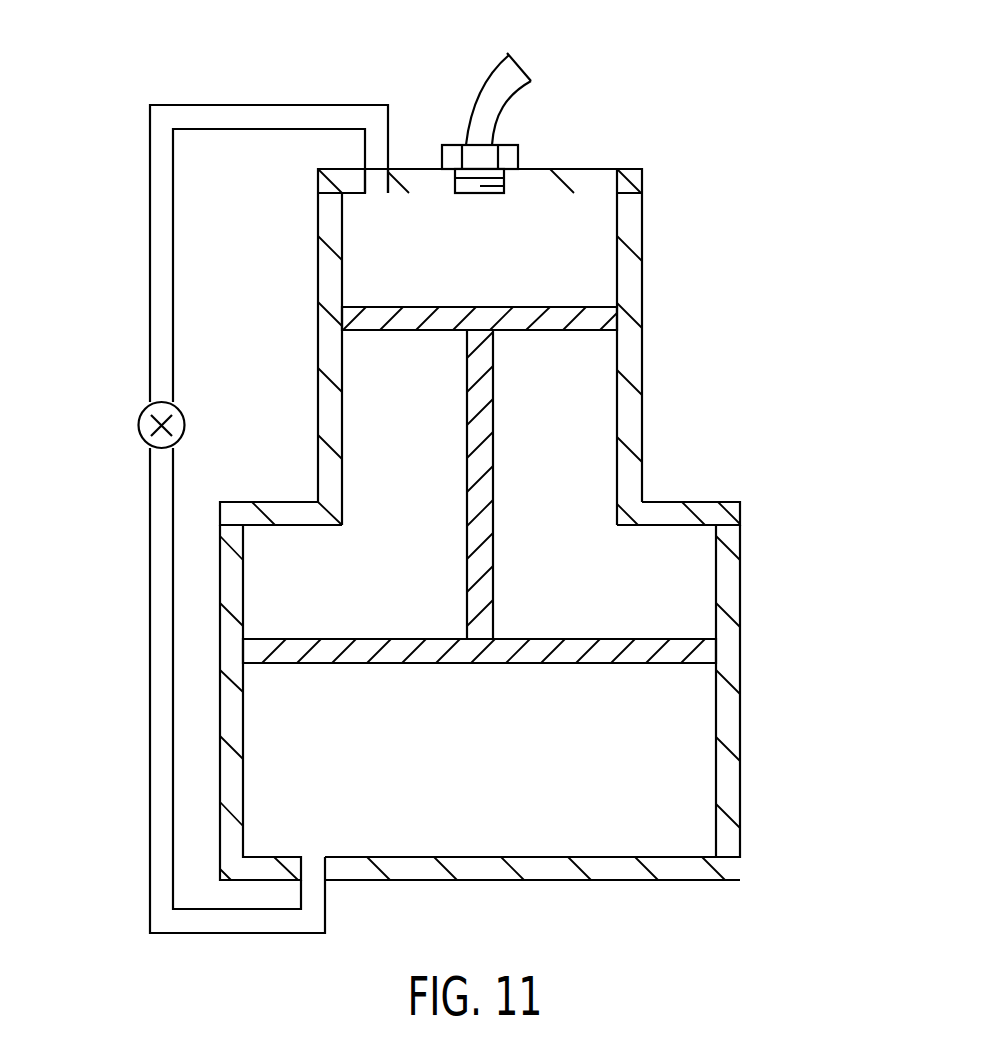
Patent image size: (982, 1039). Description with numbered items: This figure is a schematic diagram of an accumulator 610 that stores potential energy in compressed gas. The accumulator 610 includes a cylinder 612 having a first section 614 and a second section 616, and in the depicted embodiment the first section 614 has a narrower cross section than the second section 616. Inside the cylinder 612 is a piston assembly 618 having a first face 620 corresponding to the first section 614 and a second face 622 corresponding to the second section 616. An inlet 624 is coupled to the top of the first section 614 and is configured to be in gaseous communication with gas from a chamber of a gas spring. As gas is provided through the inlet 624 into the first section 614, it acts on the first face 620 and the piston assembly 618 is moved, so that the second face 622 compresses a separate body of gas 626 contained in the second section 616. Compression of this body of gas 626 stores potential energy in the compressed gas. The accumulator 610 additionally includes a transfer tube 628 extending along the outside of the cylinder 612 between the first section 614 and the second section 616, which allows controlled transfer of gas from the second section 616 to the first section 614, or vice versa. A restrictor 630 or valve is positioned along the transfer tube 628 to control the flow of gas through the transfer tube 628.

The accumulator 610 is at (525, 496).
The cylinder 612 is at (630, 492).
The first section 614 is at (628, 367).
The second section 616 is at (728, 727).
The piston assembly 618 is at (483, 553).
The first face 620 is at (592, 316).
The second face 622 is at (690, 648).
The inlet 624 is at (480, 167).
The body of gas 626 is at (463, 774).
The transfer tube 628 is at (163, 292).
The restrictor 630 is at (150, 422).